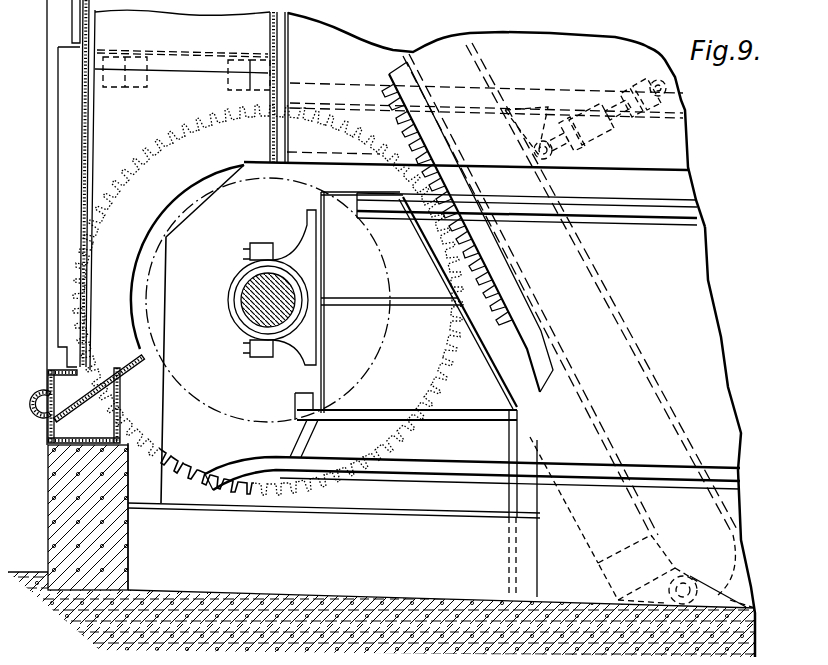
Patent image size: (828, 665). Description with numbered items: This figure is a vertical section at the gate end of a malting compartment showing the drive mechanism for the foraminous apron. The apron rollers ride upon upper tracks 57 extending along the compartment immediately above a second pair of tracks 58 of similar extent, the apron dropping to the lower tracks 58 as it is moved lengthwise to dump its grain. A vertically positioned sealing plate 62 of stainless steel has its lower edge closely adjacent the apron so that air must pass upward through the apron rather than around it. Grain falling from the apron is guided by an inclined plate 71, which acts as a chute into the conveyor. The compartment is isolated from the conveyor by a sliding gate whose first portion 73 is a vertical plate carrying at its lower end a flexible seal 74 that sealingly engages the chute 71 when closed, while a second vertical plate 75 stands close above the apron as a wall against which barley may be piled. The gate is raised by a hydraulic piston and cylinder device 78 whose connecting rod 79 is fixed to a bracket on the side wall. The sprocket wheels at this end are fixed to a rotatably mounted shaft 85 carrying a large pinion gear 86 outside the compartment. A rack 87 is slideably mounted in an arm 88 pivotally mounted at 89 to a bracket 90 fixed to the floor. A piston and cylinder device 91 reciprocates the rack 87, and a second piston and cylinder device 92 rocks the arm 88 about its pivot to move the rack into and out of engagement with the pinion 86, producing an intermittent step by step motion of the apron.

The tracks 57 is at (641, 201).
The second pair of tracks 58 is at (733, 465).
The vertically positioned plate 62 is at (665, 164).
The inclined plate 71 is at (122, 369).
The first portion 73 is at (86, 128).
The flexible seal 74 is at (36, 418).
The vertical plate 75 is at (290, 48).
The hydraulic piston and cylinder device 78 is at (54, 318).
The connecting rod 79 is at (72, 32).
The shaft 85 is at (255, 310).
The pinion gear 86 is at (190, 127).
The rack 87 is at (518, 347).
The arm 88 is at (622, 338).
The pivot 89 is at (688, 578).
The bracket 90 is at (741, 578).
The piston and cylinder device 91 is at (591, 522).
The second piston and cylinder device 92 is at (625, 128).